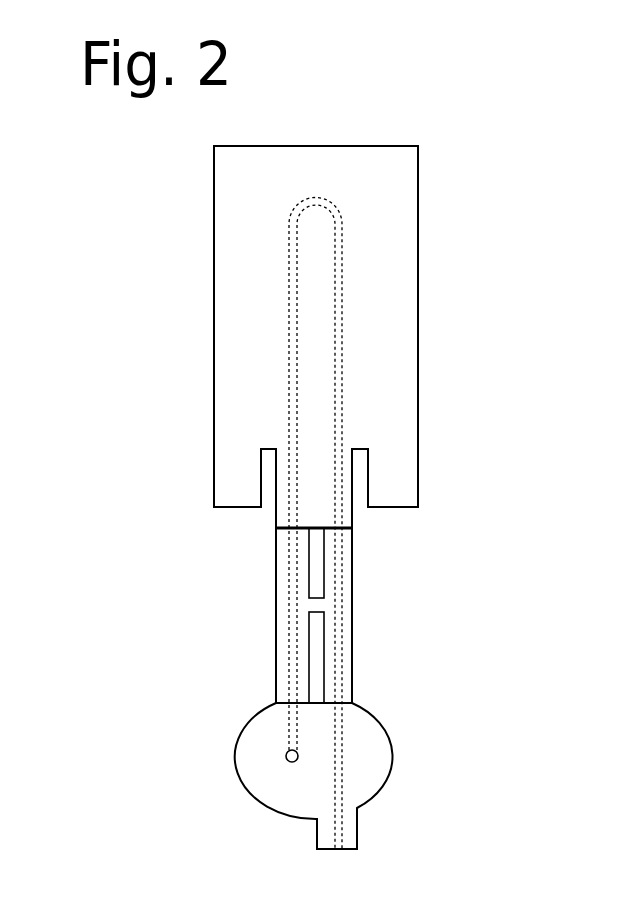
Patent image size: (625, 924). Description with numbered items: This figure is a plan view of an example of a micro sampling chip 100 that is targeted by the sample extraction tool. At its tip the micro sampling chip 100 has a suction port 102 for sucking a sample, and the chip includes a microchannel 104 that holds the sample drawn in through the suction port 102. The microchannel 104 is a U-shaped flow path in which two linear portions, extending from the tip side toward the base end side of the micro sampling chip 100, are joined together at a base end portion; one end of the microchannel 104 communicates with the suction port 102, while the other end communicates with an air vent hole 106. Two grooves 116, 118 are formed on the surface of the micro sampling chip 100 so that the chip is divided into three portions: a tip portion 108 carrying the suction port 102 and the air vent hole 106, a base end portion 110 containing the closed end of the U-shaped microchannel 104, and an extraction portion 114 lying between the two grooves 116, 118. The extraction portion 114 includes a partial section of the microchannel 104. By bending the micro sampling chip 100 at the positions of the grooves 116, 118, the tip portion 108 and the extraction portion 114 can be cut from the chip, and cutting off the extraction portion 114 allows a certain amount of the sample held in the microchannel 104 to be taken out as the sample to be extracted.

The micro sampling chip 100 is at (508, 168).
The base end portion 110 is at (402, 312).
The microchannel 104 is at (338, 398).
The extraction portion 114 is at (352, 648).
The groove 118 is at (283, 530).
The groove 116 is at (285, 697).
The tip portion 108 is at (382, 756).
The air vent hole 106 is at (285, 757).
The suction port 102 is at (337, 849).